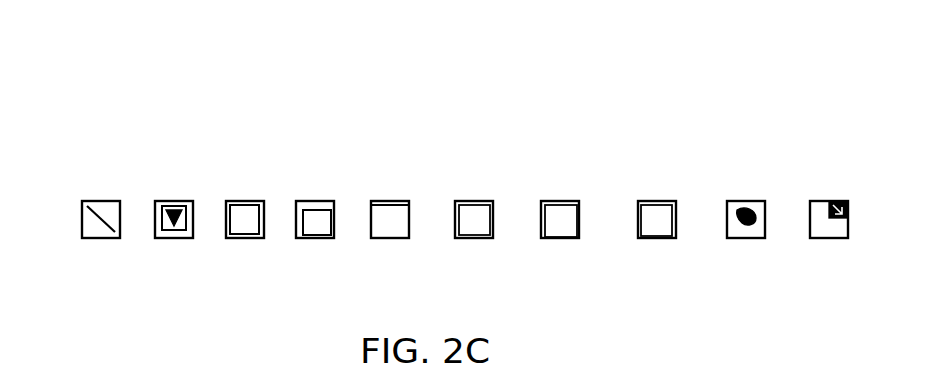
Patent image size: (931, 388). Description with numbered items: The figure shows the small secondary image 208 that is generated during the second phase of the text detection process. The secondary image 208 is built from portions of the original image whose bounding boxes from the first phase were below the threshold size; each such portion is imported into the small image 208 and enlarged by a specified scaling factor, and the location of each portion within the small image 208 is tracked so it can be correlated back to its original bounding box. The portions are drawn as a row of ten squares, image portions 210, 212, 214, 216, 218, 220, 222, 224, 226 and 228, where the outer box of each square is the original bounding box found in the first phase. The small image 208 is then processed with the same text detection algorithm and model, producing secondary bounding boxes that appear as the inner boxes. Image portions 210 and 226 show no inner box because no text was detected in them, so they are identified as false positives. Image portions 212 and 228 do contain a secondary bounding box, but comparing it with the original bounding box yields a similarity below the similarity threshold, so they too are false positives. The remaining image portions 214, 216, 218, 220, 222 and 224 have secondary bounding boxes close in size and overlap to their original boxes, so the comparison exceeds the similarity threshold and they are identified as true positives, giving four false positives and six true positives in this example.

The small secondary image 208 is at (598, 50).
The image portion 210 is at (102, 201).
The image portion 212 is at (175, 201).
The image portion 214 is at (250, 201).
The image portion 216 is at (318, 201).
The image portion 218 is at (393, 201).
The image portion 220 is at (480, 201).
The image portion 222 is at (565, 201).
The image portion 224 is at (655, 201).
The image portion 226 is at (747, 201).
The image portion 228 is at (830, 201).